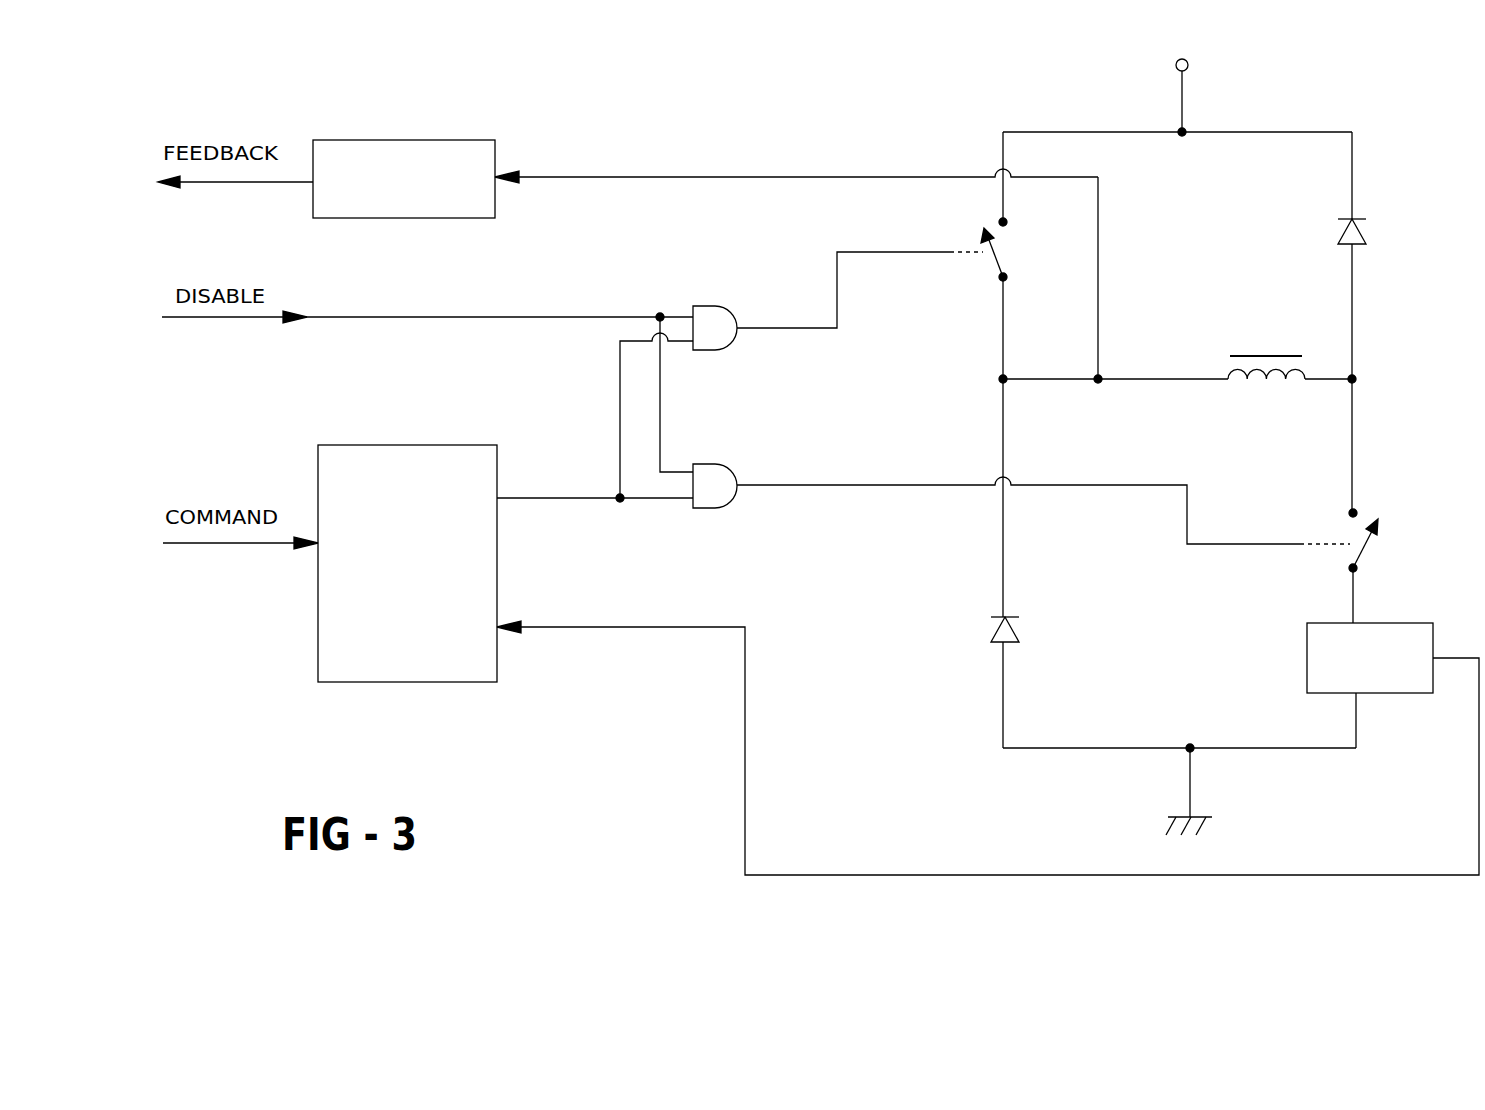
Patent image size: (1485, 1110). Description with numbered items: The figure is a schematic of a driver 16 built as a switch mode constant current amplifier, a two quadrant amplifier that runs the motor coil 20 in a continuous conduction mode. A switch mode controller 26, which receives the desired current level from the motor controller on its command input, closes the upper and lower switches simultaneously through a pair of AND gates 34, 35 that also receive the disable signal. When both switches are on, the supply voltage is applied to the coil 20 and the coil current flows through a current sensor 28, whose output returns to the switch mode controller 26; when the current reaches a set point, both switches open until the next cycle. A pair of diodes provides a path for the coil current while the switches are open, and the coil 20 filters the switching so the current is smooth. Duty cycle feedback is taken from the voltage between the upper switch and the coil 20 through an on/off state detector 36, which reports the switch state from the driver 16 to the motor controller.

The driver 16 is at (866, 156).
The motor coil 20 is at (1265, 356).
The switch mode controller 26 is at (425, 682).
The current sensor 28 is at (1393, 693).
The AND gate 34 is at (710, 306).
The AND gate 35 is at (712, 464).
The on/off state detector 36 is at (395, 140).